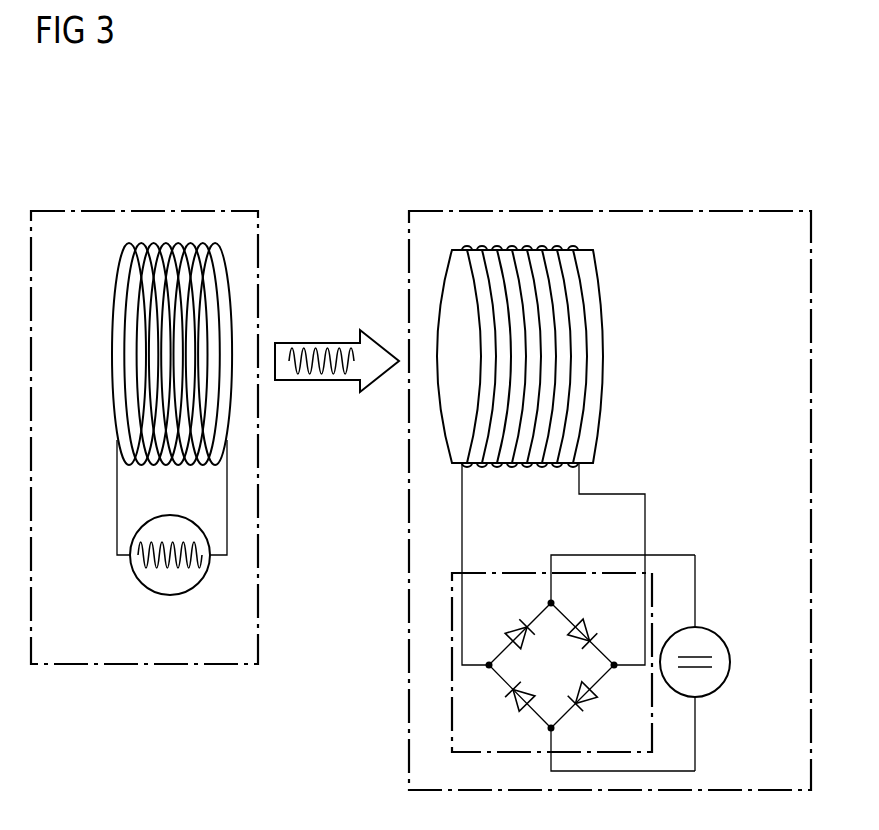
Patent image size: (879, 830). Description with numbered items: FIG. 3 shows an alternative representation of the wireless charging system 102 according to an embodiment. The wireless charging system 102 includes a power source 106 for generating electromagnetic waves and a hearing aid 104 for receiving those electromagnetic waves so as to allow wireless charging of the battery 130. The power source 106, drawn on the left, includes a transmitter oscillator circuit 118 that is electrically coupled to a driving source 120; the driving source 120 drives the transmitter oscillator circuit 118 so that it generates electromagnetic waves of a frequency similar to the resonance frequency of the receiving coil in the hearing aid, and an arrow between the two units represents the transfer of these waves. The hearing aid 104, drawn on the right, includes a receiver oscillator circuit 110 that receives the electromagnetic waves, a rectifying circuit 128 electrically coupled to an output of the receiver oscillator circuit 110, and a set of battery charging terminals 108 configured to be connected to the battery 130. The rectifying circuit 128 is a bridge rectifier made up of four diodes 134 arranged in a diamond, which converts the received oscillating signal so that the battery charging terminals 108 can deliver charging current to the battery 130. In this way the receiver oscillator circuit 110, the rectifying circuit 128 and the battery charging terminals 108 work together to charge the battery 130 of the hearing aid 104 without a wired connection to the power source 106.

The wireless charging system 102 is at (97, 152).
The hearing aid 104 is at (641, 210).
The power source 106 is at (191, 210).
The set of battery charging terminals 108 is at (697, 627).
The receiver oscillator circuit 110 is at (605, 347).
The transmitter oscillator circuit 118 is at (112, 344).
The driving source 120 is at (170, 596).
The rectifying circuit 128 is at (527, 571).
The battery 130 is at (731, 662).
The diodes 134 is at (516, 625).